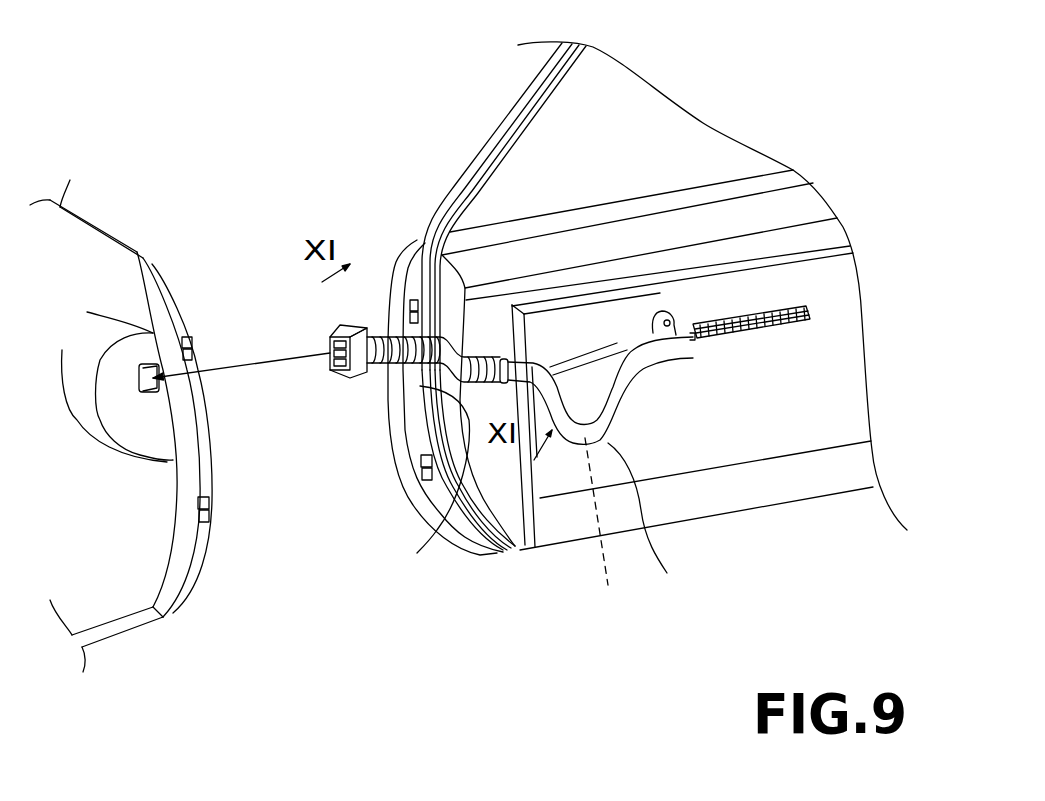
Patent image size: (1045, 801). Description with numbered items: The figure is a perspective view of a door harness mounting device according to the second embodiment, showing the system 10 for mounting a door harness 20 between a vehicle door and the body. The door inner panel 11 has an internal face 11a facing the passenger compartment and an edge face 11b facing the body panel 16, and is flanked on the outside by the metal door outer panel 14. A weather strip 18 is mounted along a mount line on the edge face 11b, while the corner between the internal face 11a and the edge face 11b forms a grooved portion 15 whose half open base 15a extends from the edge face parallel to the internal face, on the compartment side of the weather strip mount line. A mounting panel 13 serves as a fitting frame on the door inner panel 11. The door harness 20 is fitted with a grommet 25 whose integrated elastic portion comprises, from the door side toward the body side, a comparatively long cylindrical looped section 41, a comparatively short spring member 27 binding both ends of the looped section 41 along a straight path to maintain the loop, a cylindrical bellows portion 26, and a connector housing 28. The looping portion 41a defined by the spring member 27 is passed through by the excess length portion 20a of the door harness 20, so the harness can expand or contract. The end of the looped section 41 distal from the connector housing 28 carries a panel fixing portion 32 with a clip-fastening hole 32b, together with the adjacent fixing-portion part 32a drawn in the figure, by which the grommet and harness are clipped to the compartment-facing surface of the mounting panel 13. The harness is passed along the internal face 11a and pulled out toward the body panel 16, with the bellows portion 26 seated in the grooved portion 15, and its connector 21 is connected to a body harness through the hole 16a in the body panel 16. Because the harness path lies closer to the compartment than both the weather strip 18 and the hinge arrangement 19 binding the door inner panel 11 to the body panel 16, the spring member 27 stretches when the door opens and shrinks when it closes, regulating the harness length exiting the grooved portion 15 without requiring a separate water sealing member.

The system for mounting a door harness 10 is at (410, 136).
The door inner panel 11 is at (415, 258).
The internal face 11a is at (490, 462).
The edge face 11b is at (487, 410).
The mounting panel 13 is at (737, 443).
The door outer panel 14 is at (520, 433).
The grooved portion 15 is at (447, 393).
The half open base 15a is at (440, 292).
The body panel 16 is at (106, 331).
The hole 16a is at (140, 447).
The weather strip 18 is at (497, 145).
The hinge arrangement 19 is at (408, 303).
The door harness 20 is at (783, 310).
The excess length portion 20a is at (608, 527).
The connector 21 is at (345, 372).
The grommet 25 is at (520, 552).
The bellows portion 26 is at (423, 366).
The spring member 27 is at (583, 363).
The connector housing 28 is at (375, 334).
The panel fixing portion 32 is at (659, 355).
The protector hose end 32a is at (673, 320).
The clip-fastening hole 32b is at (655, 327).
The looped section 41 is at (430, 557).
The looping portion 41a is at (657, 517).